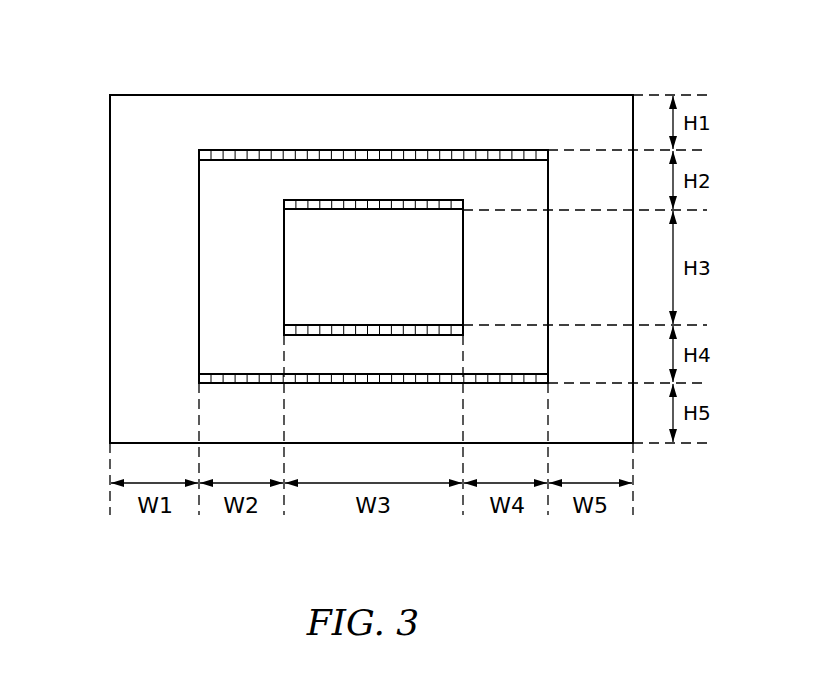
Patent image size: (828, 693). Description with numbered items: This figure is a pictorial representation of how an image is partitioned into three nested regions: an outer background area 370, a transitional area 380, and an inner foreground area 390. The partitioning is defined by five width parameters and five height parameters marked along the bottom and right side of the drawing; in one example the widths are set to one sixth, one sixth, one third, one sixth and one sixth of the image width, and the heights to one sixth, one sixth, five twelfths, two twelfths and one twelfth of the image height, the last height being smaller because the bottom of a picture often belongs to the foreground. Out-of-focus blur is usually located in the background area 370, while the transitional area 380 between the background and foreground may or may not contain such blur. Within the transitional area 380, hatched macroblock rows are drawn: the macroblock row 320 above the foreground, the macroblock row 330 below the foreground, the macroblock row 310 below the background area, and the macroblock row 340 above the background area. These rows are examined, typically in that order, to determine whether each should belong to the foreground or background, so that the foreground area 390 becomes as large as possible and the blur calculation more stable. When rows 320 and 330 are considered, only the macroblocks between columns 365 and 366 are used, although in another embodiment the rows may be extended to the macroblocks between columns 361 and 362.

The macroblock row below the background area 310 is at (198, 154).
The macroblock row above the foreground 320 is at (283, 203).
The macroblock row below the foreground 330 is at (283, 328).
The macroblock row above the background area 340 is at (198, 377).
The macroblock column 361 is at (197, 512).
The macroblock column 362 is at (546, 512).
The macroblock column 365 is at (282, 512).
The macroblock column 366 is at (461, 512).
The background area 370 is at (220, 118).
The transitional area 380 is at (305, 183).
The foreground area 390 is at (365, 253).